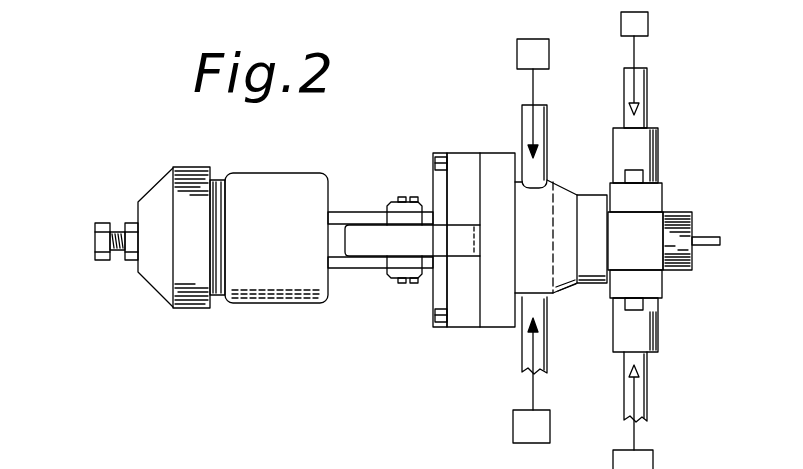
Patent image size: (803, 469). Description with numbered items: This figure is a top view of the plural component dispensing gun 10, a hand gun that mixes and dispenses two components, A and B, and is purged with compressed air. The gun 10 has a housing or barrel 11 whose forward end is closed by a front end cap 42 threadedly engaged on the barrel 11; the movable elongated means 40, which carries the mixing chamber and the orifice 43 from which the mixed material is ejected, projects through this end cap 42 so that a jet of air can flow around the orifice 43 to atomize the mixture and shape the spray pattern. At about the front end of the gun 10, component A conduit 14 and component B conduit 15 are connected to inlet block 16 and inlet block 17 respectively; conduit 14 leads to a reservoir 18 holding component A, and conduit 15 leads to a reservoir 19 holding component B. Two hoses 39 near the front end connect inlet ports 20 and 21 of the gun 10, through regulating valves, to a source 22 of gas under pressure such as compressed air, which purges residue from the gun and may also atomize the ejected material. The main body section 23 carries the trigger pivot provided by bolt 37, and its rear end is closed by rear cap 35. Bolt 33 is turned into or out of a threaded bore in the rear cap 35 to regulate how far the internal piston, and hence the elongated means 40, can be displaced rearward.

The plural component dispensing gun 10 is at (357, 122).
The barrel 11 is at (565, 292).
The component A conduit 14 is at (647, 397).
The component B conduit 15 is at (647, 103).
The inlet block 16 is at (658, 327).
The inlet block 17 is at (658, 165).
The reservoir 18 is at (660, 468).
The reservoir 19 is at (648, 22).
The inlet port 20 is at (545, 300).
The inlet port 21 is at (547, 180).
The source of gas under pressure 22 is at (549, 57).
The main body section 23 is at (368, 223).
The bolt 33 is at (96, 242).
The rear cap 35 is at (157, 186).
The bolt 37 is at (400, 284).
The hoses 39 is at (522, 130).
The movable elongated means 40 is at (705, 237).
The front end cap 42 is at (678, 212).
The orifice 43 is at (720, 243).